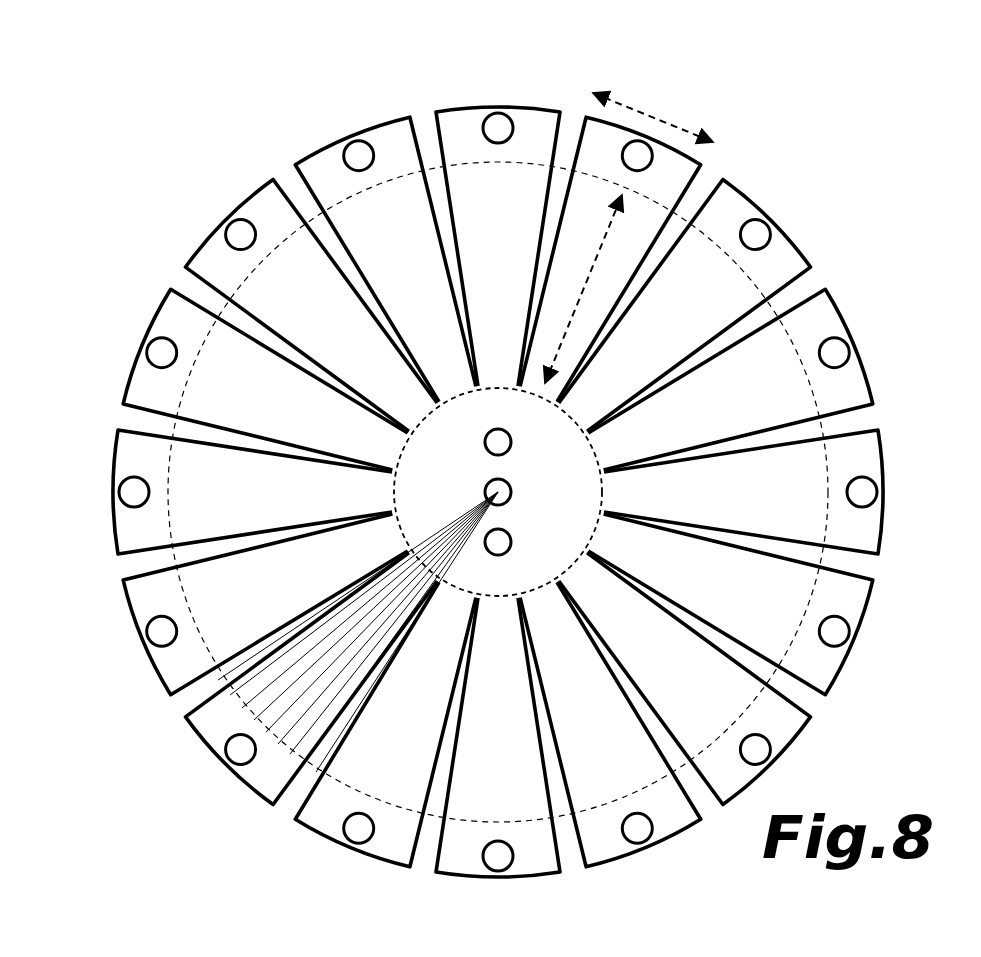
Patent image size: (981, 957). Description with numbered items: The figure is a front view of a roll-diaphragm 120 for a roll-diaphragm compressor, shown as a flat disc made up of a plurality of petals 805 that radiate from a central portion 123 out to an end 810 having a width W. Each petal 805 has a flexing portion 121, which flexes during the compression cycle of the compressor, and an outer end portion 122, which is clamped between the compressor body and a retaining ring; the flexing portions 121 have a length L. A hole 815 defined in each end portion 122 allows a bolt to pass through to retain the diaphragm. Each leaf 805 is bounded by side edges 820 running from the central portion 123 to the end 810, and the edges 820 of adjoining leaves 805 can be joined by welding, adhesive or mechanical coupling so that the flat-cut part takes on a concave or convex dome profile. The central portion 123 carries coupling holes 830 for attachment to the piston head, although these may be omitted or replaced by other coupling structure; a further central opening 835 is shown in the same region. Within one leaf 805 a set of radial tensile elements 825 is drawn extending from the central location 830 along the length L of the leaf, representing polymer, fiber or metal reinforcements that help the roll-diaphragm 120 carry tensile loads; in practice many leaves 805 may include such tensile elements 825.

The roll-diaphragm 120 is at (292, 90).
The flexing portion 121 is at (283, 340).
The end portion 122 is at (252, 187).
The central portion 123 is at (455, 395).
The petal 805 is at (110, 462).
The end 810 is at (148, 665).
The hole 815 is at (220, 748).
The side edge 820 is at (447, 682).
The radial tensile element 825 is at (290, 640).
The coupling hole 830 is at (512, 490).
The mounting aperture 835 is at (512, 540).
The length L is at (566, 300).
The width W is at (625, 102).